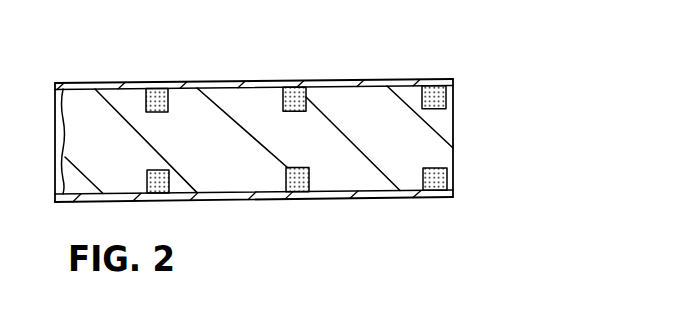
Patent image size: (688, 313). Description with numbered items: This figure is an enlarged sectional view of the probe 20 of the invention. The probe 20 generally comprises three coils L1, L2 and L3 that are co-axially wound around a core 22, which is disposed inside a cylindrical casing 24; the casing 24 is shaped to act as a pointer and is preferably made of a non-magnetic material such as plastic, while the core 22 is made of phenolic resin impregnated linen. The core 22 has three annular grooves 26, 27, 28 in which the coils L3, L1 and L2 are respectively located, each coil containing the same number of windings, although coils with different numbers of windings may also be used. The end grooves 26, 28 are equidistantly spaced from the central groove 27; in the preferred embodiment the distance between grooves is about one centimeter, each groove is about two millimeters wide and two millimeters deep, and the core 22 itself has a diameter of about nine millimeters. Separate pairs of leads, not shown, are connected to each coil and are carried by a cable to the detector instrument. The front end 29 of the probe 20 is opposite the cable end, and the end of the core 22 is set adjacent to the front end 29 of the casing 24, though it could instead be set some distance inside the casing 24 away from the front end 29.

The probe 20 is at (466, 213).
The core 22 is at (435, 140).
The cylindrical casing 24 is at (449, 79).
The front end 29 is at (460, 110).
The coil L1 is at (297, 87).
The coil L2 is at (437, 86).
The coil L3 is at (160, 83).
The annular groove 26 is at (153, 188).
The central groove 27 is at (291, 188).
The annular groove 28 is at (428, 180).